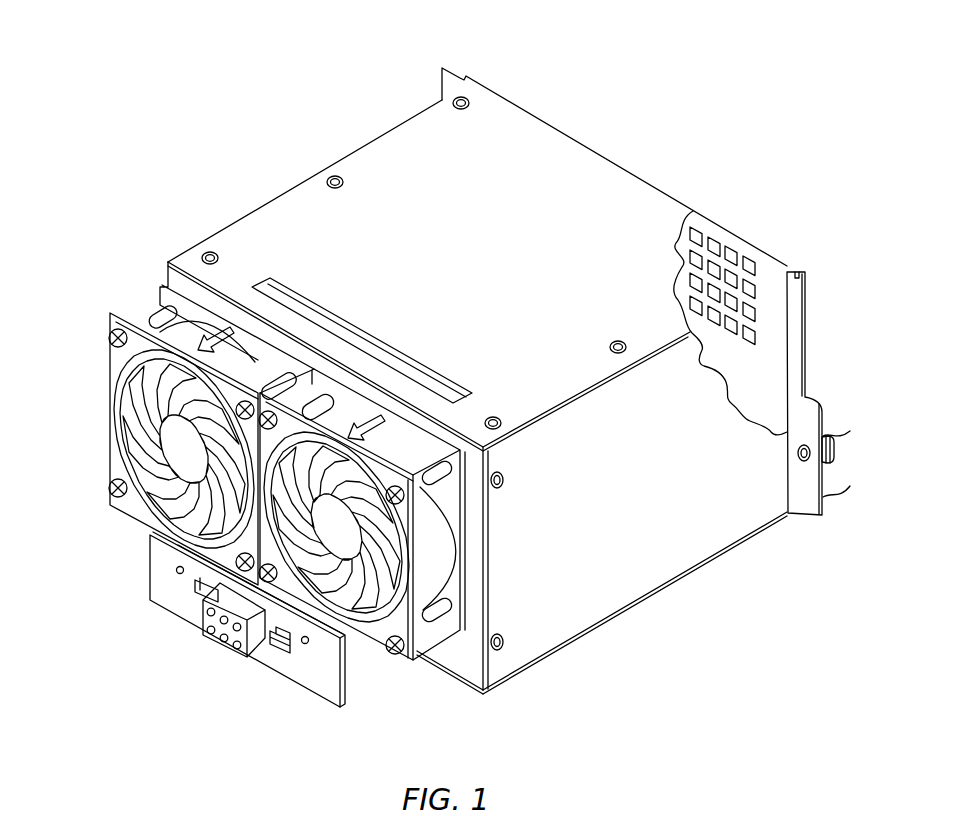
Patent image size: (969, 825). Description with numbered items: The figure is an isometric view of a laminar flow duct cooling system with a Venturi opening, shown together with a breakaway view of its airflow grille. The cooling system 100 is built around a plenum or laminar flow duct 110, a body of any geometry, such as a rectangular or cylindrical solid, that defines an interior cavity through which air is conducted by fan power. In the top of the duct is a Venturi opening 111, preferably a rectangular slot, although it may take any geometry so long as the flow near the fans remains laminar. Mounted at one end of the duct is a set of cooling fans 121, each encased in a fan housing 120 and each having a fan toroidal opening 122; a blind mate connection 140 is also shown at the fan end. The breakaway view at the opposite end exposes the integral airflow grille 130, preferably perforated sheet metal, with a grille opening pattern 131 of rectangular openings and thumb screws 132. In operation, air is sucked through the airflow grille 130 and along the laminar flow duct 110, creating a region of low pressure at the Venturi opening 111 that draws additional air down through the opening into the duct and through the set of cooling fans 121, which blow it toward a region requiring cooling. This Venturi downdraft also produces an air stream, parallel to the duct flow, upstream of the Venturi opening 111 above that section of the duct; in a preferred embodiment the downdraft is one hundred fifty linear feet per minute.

The cooling system 100 is at (656, 83).
The laminar flow duct 110 is at (589, 152).
The Venturi opening 111 is at (360, 345).
The fan housing 120 is at (120, 312).
The cooling fans 121 is at (440, 560).
The fan toroidal opening 122 is at (364, 613).
The airflow grille 130 is at (824, 503).
The grille opening pattern 131 is at (747, 262).
The thumb screws 132 is at (836, 446).
The blind mate connection 140 is at (220, 648).